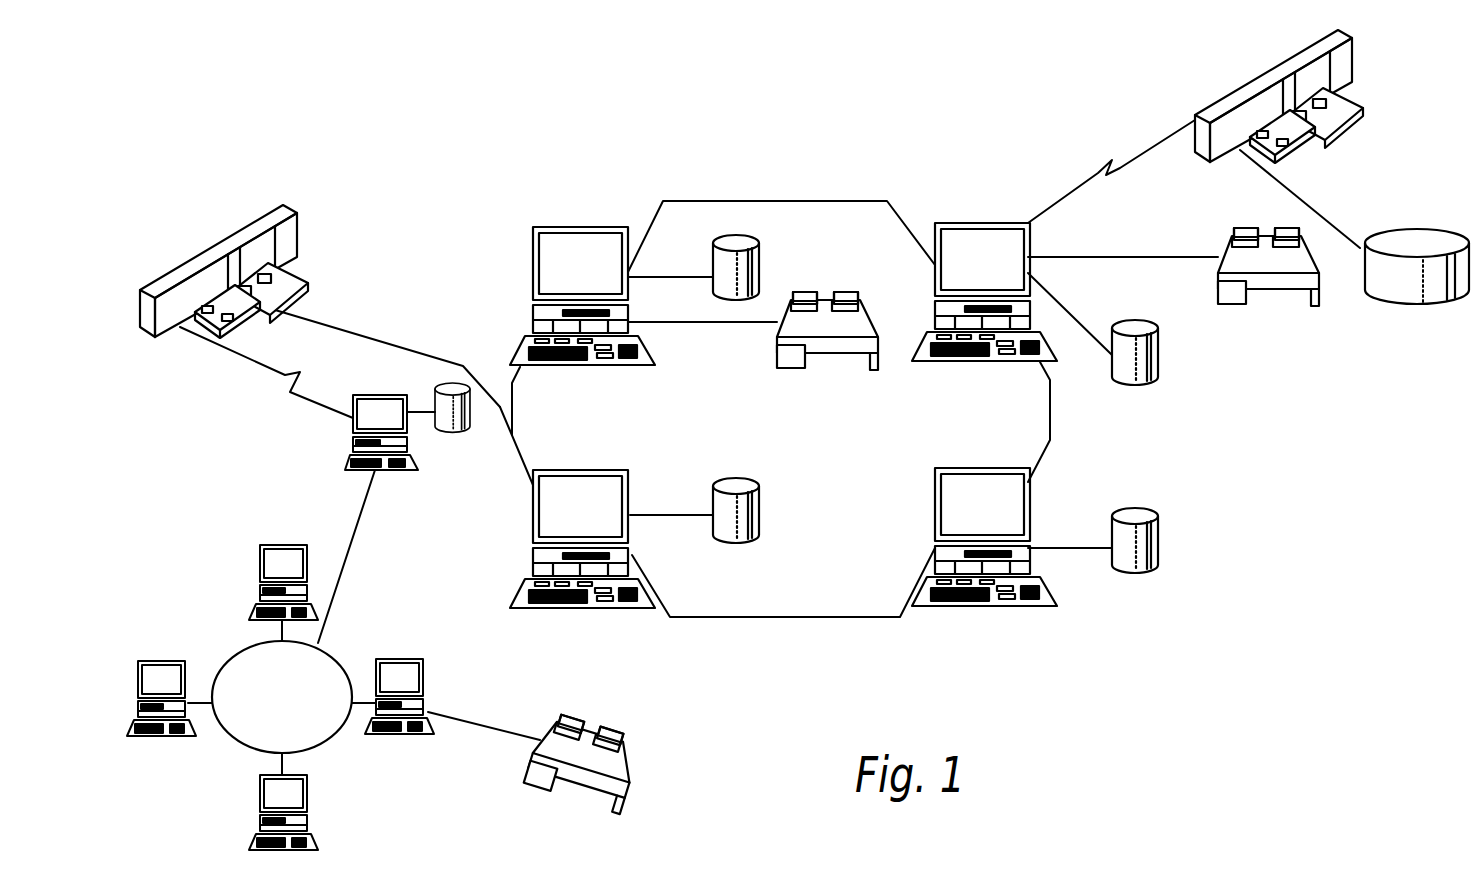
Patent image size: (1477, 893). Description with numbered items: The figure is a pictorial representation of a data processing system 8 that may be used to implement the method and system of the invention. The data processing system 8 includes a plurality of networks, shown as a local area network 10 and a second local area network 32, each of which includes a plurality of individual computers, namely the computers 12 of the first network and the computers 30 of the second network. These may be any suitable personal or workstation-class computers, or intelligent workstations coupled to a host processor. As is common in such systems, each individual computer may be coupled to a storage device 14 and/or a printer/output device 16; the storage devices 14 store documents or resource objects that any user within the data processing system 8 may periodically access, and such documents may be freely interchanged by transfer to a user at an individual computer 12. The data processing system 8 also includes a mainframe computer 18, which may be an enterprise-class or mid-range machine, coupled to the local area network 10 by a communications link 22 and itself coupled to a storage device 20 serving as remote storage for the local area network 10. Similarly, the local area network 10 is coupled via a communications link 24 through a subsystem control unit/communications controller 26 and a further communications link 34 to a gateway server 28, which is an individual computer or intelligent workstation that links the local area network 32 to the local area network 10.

The data processing system 8 is at (811, 148).
The local area network 10 is at (810, 619).
The individual computer 12 is at (600, 227).
The storage device 14 is at (759, 257).
The printer/output device 16 is at (822, 300).
The mainframe computer 18 is at (1275, 70).
The storage device 20 is at (1440, 243).
The communications link 22 is at (1147, 152).
The communications link 24 is at (385, 340).
The subsystem control unit/communications controller 26 is at (290, 214).
The gateway server 28 is at (378, 395).
The individual computer 30 is at (294, 545).
The local area network 32 is at (232, 738).
The communications link 34 is at (295, 395).